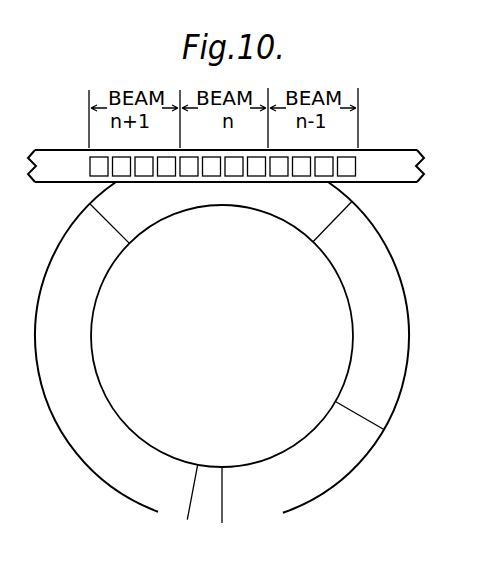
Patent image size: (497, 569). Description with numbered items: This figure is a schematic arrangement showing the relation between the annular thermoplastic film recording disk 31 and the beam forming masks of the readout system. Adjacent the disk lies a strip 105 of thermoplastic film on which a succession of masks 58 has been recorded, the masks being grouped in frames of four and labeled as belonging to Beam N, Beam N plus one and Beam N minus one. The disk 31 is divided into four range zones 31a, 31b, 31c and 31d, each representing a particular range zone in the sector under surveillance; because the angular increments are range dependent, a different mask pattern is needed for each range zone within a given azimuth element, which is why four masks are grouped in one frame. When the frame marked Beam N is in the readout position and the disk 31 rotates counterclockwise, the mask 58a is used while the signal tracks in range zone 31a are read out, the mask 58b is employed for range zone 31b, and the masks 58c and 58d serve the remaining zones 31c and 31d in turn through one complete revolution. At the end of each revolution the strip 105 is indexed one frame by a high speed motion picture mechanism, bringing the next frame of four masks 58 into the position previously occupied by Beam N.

The strip of thermoplastic film 105 is at (392, 150).
The masks 58 is at (357, 166).
The mask 58a is at (255, 157).
The mask 58b is at (236, 178).
The mask 58c is at (211, 157).
The mask 58d is at (189, 178).
The thermoplastic film recording disk 31 is at (412, 335).
The range zone 31a is at (124, 362).
The range zone 31b is at (330, 221).
The range zone 31c is at (364, 362).
The range zone 31d is at (265, 495).